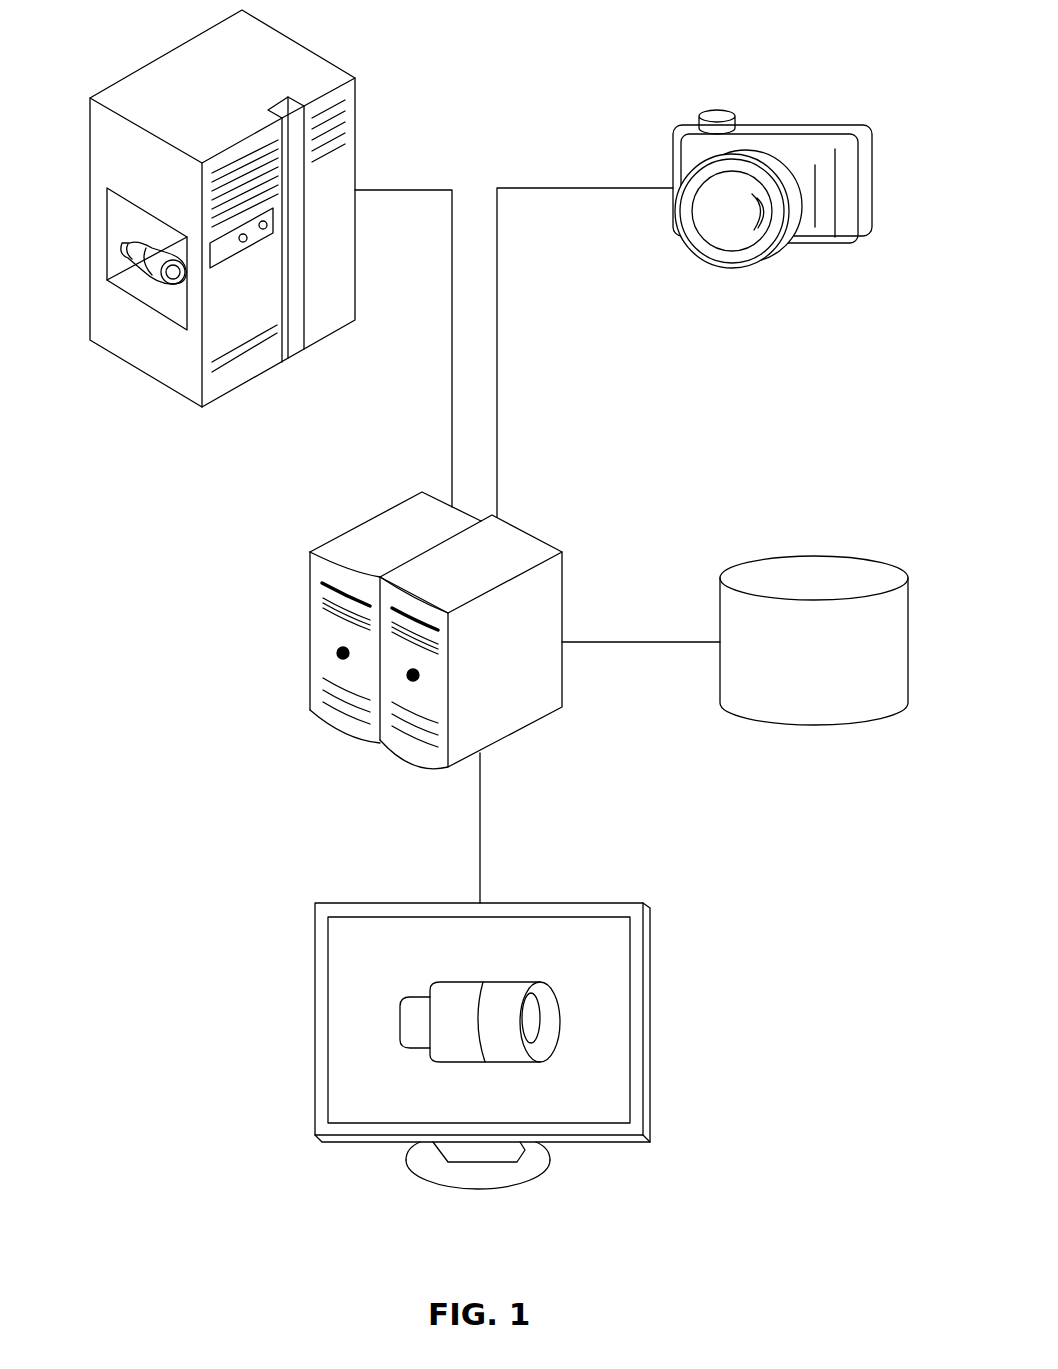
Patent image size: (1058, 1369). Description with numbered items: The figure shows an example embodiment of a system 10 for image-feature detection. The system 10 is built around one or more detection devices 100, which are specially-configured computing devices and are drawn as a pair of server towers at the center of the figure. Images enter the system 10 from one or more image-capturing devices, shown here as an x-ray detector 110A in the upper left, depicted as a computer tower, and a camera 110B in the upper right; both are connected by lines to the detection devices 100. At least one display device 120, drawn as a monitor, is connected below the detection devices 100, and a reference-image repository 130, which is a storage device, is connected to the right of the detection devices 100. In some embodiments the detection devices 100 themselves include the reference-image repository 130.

The system 10 is at (884, 1076).
The detection device 100 is at (310, 563).
The x-ray detector 110A is at (150, 62).
The camera 110B is at (685, 125).
The display device 120 is at (315, 923).
The reference-image repository 130 is at (755, 562).